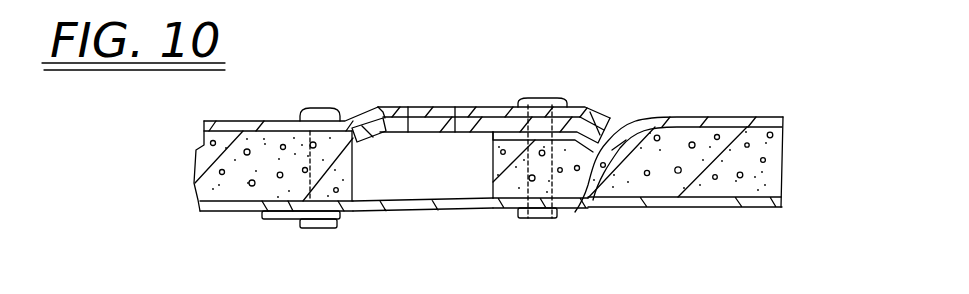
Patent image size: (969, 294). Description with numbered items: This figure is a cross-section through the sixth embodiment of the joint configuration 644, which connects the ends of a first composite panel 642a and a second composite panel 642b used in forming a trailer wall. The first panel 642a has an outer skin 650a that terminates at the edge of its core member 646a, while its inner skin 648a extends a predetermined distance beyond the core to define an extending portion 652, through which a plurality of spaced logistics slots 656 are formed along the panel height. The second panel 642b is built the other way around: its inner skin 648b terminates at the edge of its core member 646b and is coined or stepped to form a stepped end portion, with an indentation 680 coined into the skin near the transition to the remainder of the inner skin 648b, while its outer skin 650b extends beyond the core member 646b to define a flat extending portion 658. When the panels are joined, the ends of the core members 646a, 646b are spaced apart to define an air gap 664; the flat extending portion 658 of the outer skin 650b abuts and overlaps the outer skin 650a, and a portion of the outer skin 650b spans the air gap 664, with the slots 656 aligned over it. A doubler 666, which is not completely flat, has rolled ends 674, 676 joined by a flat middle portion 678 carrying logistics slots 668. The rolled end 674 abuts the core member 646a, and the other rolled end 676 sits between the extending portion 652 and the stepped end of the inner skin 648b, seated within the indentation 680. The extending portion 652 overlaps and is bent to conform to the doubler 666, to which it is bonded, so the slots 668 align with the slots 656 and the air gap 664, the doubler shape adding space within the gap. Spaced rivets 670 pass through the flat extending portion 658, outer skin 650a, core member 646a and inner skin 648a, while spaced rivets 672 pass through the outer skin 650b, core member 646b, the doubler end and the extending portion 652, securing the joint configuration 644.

The first composite panel 642a is at (246, 164).
The second composite panel 642b is at (707, 154).
The joint configuration 644 is at (490, 158).
The core member 646a is at (202, 147).
The core member 646b is at (777, 137).
The inner skin 648a is at (230, 125).
The inner skin 648b is at (700, 120).
The outer skin 650a is at (212, 210).
The outer skin 650b is at (717, 207).
The extending portion 652 is at (507, 108).
The logistics slots 656 is at (453, 113).
The flat extending portion 658 is at (428, 212).
The air gap 664 is at (478, 192).
The doubler 666 is at (377, 128).
The logistics slots 668 is at (428, 127).
The rivets 670 is at (318, 103).
The rivets 672 is at (543, 96).
The rolled end 674 is at (365, 118).
The rolled end 676 is at (592, 112).
The flat middle portion 678 is at (468, 123).
The indentation 680 is at (580, 207).